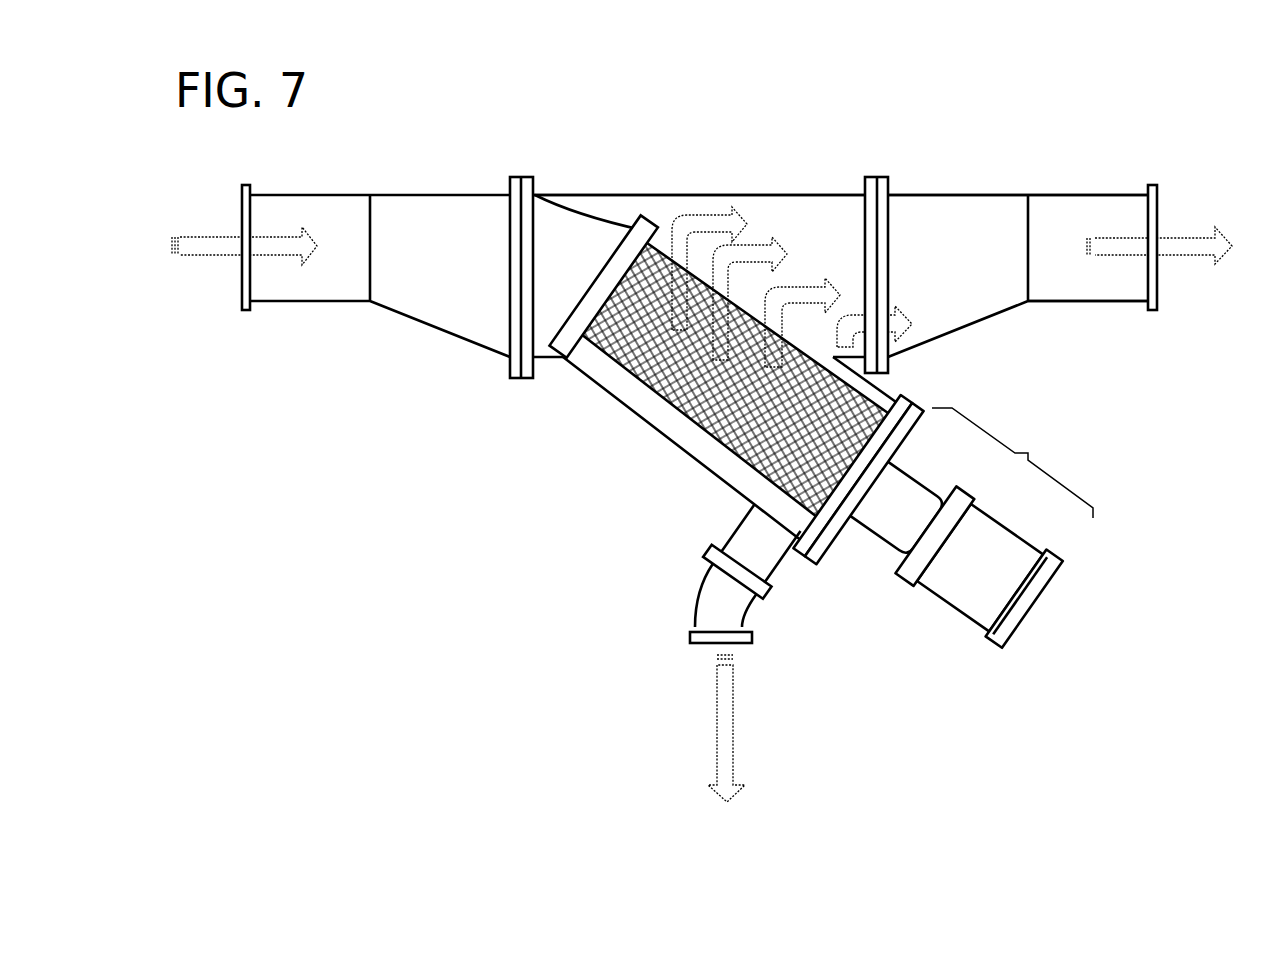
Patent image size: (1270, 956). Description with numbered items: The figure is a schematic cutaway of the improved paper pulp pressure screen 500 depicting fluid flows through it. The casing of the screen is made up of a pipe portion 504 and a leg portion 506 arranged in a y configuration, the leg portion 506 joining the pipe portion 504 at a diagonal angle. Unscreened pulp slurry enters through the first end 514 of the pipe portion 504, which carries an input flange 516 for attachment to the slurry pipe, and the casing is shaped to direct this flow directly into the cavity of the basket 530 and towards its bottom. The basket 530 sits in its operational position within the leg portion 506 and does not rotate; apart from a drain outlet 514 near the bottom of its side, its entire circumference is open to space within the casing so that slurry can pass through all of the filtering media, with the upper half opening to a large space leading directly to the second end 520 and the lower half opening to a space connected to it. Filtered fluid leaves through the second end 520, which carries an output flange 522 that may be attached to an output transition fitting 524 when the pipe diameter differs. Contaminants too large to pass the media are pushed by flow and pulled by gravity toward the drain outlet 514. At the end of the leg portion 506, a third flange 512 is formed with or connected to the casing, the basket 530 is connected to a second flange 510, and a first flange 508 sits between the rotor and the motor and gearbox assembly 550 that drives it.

The improved paper pulp pressure screen 500 is at (408, 570).
The pipe portion 504 is at (692, 195).
The leg portion 506 is at (700, 460).
The first flange 508 is at (924, 406).
The second flange 510 is at (914, 400).
The third flange 512 is at (905, 393).
The first end 514 is at (395, 195).
The input flange 516 is at (525, 175).
The second end 520 is at (807, 222).
The output flange 522 is at (870, 175).
The output transition fitting 524 is at (967, 195).
The basket 530 is at (687, 377).
The motor and gearbox assembly 550 is at (1012, 463).